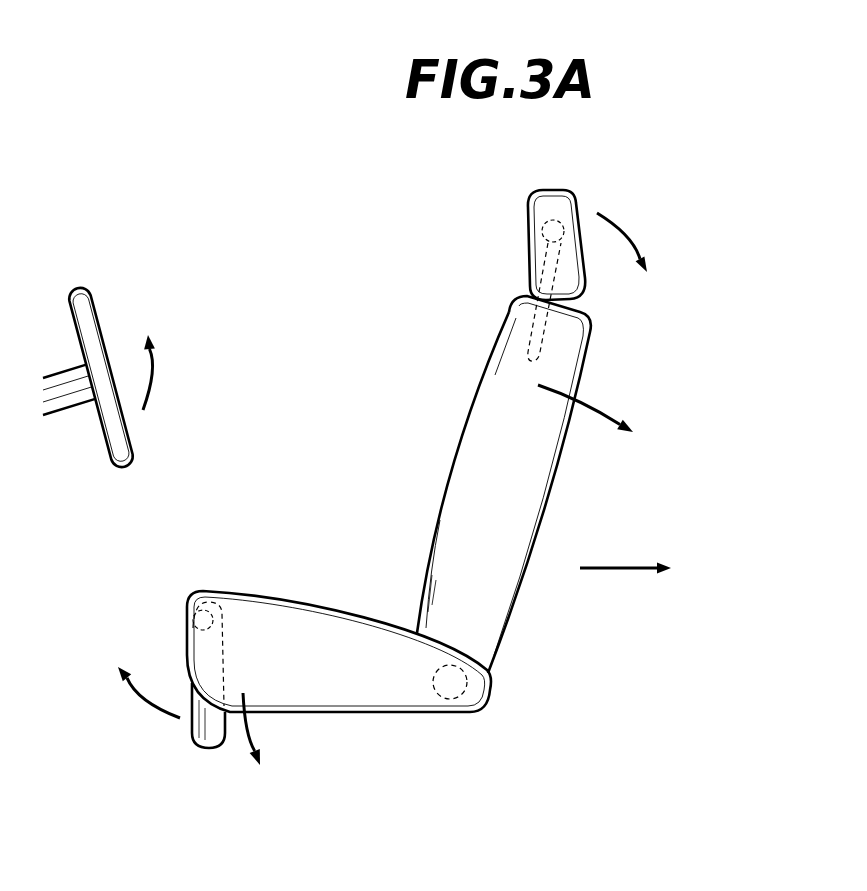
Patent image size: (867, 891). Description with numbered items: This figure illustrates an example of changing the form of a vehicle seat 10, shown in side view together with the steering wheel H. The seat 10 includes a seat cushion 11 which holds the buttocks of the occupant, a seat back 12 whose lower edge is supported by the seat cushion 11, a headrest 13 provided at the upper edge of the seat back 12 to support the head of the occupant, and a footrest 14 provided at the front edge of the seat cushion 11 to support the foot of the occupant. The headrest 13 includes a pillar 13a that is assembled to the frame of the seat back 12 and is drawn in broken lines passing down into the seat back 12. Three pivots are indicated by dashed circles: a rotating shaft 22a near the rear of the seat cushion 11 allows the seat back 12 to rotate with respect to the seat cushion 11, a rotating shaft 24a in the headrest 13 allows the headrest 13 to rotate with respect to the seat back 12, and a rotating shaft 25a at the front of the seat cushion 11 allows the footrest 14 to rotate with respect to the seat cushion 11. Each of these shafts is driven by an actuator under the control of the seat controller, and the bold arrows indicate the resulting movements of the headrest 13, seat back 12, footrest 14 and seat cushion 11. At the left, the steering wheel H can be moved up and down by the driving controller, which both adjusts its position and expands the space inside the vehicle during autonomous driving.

The seat 10 is at (371, 479).
The seat cushion 11 is at (285, 600).
The seat back 12 is at (458, 453).
The headrest 13 is at (558, 192).
The pillar 13a is at (548, 335).
The footrest 14 is at (213, 742).
The rotating shaft 22a is at (463, 703).
The rotating shaft 24a is at (541, 227).
The rotating shaft 25a is at (188, 617).
The steering wheel H is at (92, 318).